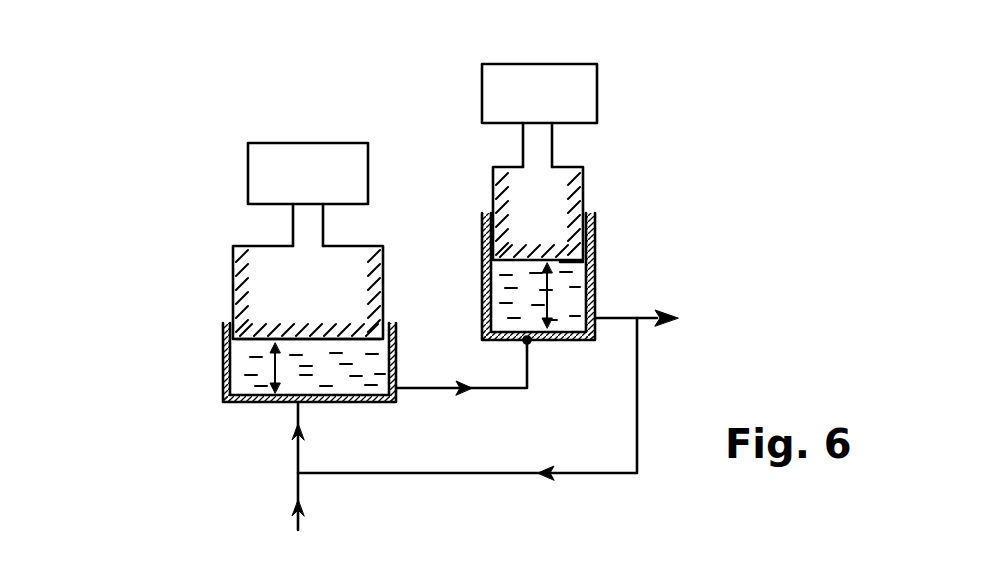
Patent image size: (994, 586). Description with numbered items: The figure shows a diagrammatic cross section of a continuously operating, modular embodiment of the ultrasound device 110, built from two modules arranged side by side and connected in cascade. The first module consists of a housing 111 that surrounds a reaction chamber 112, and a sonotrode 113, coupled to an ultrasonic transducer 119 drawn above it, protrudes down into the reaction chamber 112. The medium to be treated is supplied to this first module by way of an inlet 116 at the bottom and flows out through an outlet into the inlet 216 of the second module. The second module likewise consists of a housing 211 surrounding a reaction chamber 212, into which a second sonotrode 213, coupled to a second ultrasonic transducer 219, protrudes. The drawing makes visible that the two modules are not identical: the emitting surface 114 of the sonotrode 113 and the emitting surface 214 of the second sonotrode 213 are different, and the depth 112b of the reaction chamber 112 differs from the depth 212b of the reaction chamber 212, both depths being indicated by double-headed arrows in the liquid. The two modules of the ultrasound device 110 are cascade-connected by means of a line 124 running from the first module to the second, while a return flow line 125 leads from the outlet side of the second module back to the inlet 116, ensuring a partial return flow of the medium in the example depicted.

The ultrasound device 110 is at (663, 110).
The housing 111 is at (225, 363).
The reaction chamber 112 is at (303, 378).
The depth of the reaction chamber 112b is at (272, 375).
The sonotrode 113 is at (256, 288).
The emitting surface 114 is at (306, 338).
The inlet 116 is at (298, 452).
The ultrasonic transducer 119 is at (275, 168).
The line 124 is at (496, 389).
The return flow line 125 is at (492, 474).
The housing 211 is at (594, 248).
The reaction chamber 212 is at (567, 292).
The depth of the reaction chamber 212b is at (550, 300).
The second sonotrode 213 is at (528, 190).
The emitting surface 214 is at (560, 262).
The inlet 216 is at (529, 342).
The second ultrasonic transducer 219 is at (578, 87).